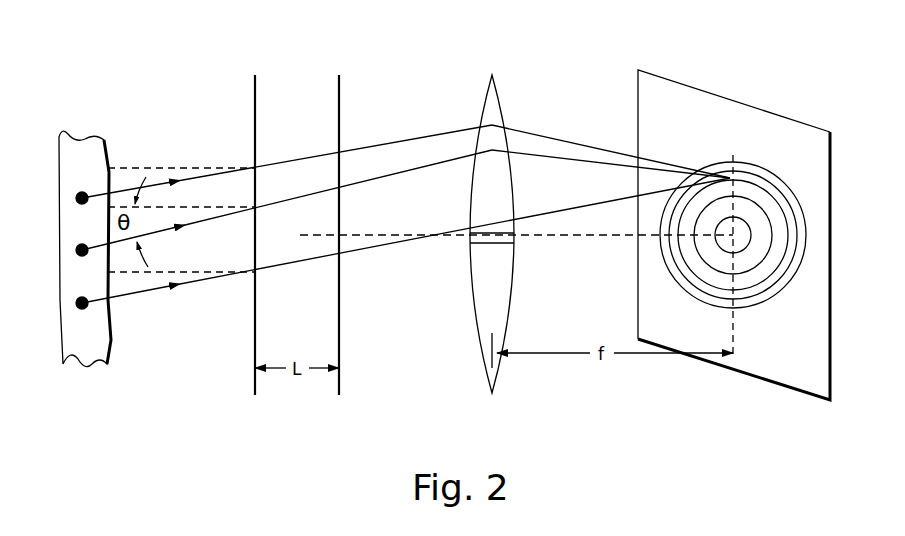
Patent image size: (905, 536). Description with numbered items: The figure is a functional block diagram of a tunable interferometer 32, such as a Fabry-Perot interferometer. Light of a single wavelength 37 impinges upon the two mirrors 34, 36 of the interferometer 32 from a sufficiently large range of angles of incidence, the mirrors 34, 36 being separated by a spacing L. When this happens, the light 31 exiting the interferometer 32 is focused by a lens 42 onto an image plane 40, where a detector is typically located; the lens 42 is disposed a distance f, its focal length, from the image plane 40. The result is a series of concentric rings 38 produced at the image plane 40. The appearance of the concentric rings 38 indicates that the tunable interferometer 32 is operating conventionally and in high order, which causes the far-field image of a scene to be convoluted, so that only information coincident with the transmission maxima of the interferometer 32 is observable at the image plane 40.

The light exiting the interferometer 31 is at (418, 167).
The tunable interferometer 32 is at (385, 85).
The mirror 34 is at (255, 110).
The mirror 36 is at (339, 95).
The light of a single wavelength 37 is at (90, 138).
The concentric rings 38 is at (784, 180).
The image plane 40 is at (818, 417).
The lens 42 is at (481, 345).